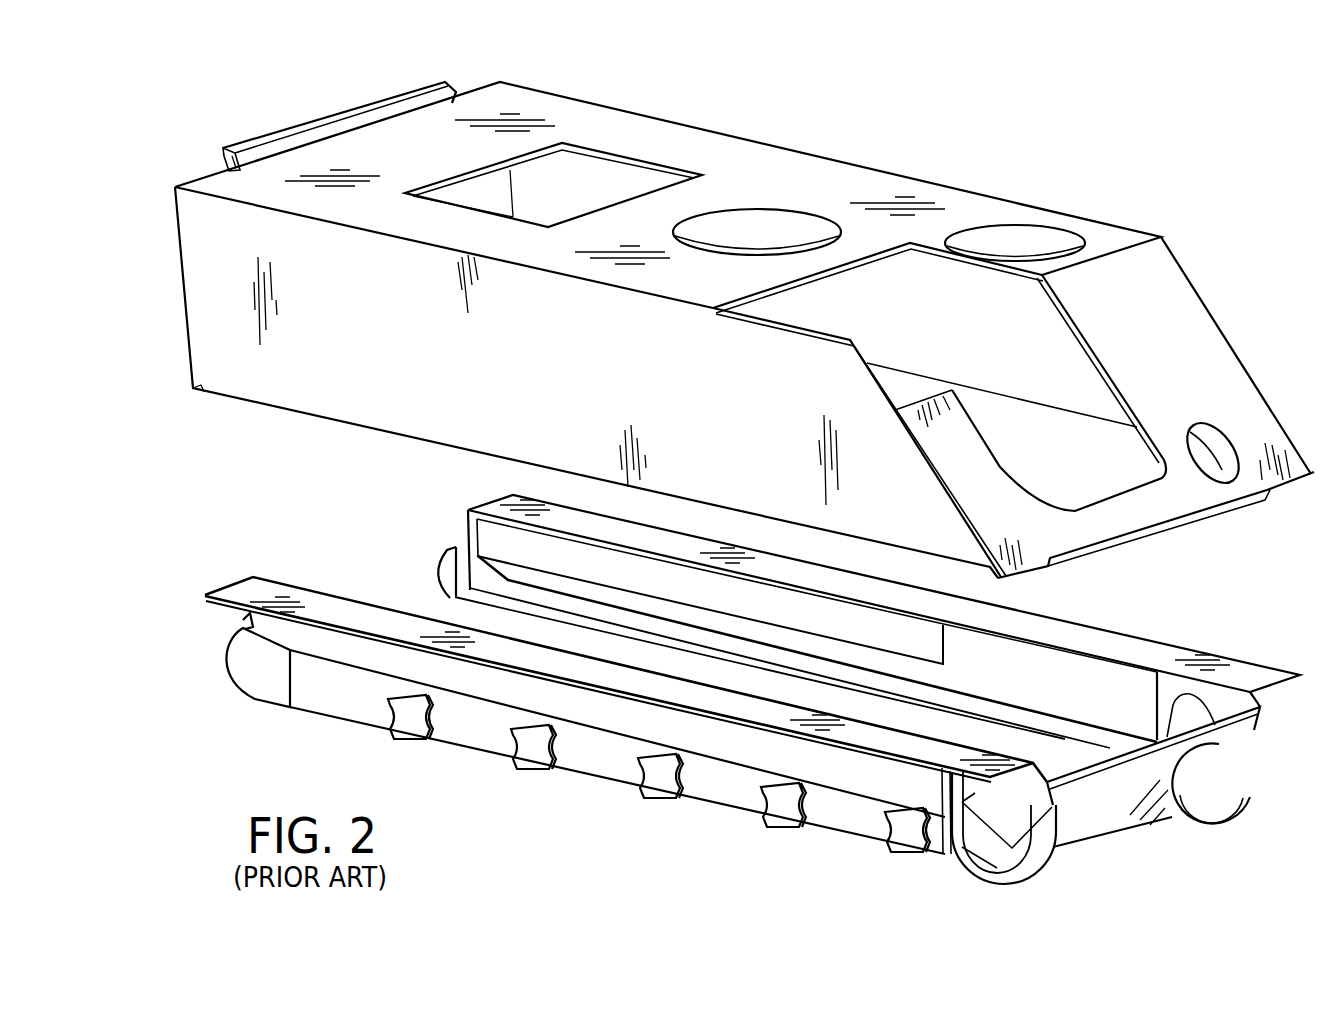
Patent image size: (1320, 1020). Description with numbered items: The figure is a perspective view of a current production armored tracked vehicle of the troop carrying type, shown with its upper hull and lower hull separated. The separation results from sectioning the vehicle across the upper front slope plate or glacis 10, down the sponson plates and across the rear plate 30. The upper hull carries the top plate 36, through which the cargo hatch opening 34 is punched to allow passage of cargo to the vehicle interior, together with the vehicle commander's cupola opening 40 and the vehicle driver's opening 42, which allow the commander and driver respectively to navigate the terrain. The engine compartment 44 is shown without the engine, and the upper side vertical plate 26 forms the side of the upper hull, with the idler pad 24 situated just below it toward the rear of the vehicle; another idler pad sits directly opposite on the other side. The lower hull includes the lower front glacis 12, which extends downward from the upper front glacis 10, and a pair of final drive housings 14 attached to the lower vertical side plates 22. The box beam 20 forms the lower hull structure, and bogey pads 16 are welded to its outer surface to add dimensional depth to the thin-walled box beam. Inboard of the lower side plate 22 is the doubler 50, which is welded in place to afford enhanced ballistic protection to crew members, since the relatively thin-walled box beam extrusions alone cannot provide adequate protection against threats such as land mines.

The upper front slope plate 10 is at (1210, 330).
The lower front glacis 12 is at (1243, 727).
The final drive housings 14 is at (1240, 767).
The bogey pads 16 is at (523, 762).
The box beam 20 is at (586, 765).
The lower vertical side plates 22 is at (357, 662).
The idler pad 24 is at (233, 662).
The upper side vertical plate 26 is at (197, 317).
The rear plate 30 is at (192, 180).
The cargo hatch opening 34 is at (587, 173).
The top plate 36 is at (735, 145).
The vehicle commander's cupola opening 40 is at (750, 230).
The vehicle driver's opening 42 is at (1030, 242).
The engine compartment 44 is at (1050, 323).
The doubler 50 is at (930, 642).